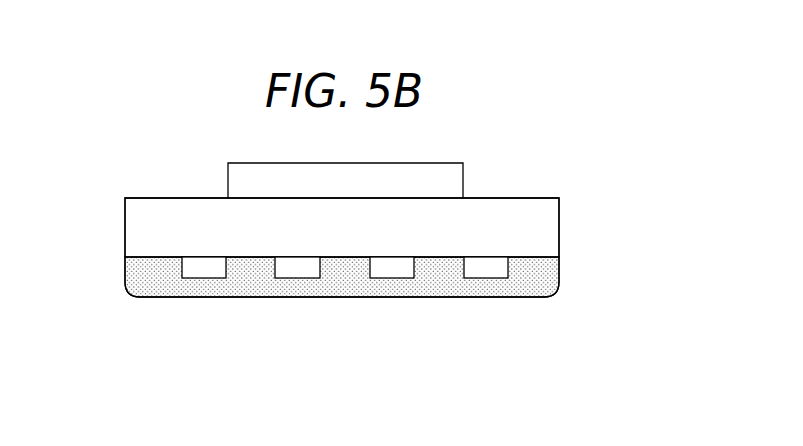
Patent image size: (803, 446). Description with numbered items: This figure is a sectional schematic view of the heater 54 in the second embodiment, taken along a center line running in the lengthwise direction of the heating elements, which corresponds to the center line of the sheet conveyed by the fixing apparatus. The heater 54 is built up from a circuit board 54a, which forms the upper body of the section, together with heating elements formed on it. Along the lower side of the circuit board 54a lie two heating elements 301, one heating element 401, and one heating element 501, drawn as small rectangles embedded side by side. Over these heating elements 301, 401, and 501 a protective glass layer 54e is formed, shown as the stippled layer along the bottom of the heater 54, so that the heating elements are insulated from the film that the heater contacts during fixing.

The heater 54 is at (535, 183).
The circuit board 54a is at (138, 217).
The protective glass layer 54e is at (527, 275).
The heating element 301 is at (208, 278).
The heating element 401 is at (297, 278).
The heating element 501 is at (388, 264).